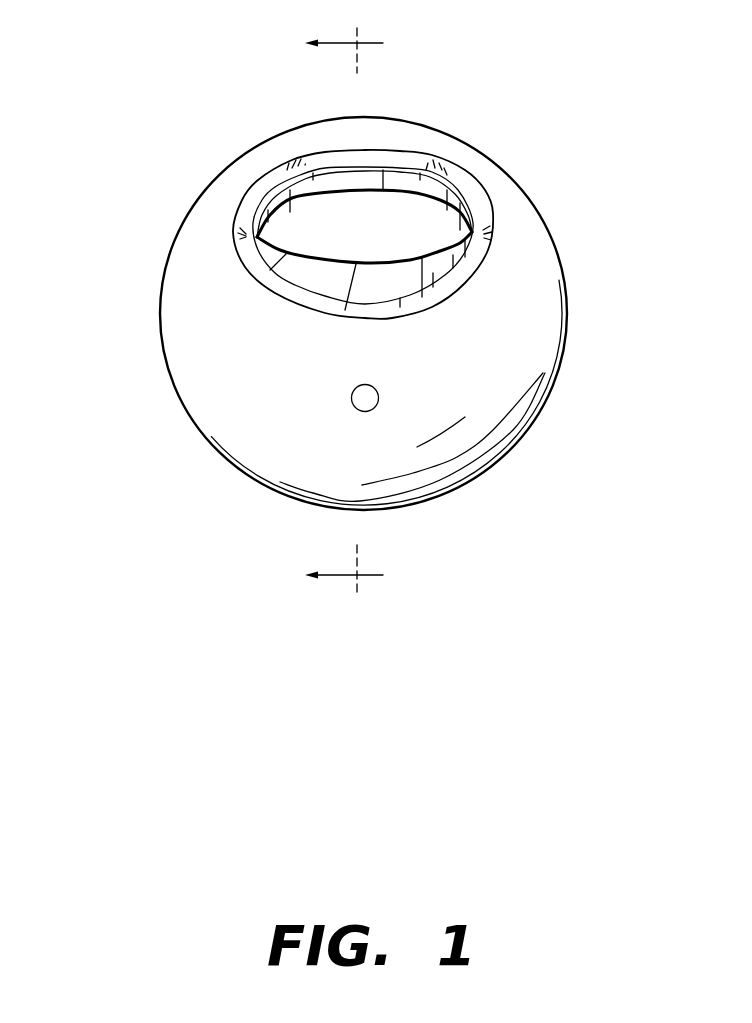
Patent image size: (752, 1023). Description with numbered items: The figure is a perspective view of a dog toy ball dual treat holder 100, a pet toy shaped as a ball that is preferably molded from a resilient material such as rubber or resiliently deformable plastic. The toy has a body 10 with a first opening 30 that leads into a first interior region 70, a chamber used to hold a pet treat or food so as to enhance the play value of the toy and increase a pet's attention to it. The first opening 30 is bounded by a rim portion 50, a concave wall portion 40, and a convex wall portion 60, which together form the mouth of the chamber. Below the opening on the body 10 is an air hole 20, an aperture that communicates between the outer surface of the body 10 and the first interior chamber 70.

The dog toy ball dual treat holder 100 is at (178, 121).
The body 10 is at (567, 318).
The air hole 20 is at (342, 390).
The first opening 30 is at (345, 202).
The concave wall portion 40 is at (433, 188).
The rim portion 50 is at (458, 180).
The convex wall portion 60 is at (300, 274).
The first interior region 70 is at (437, 242).